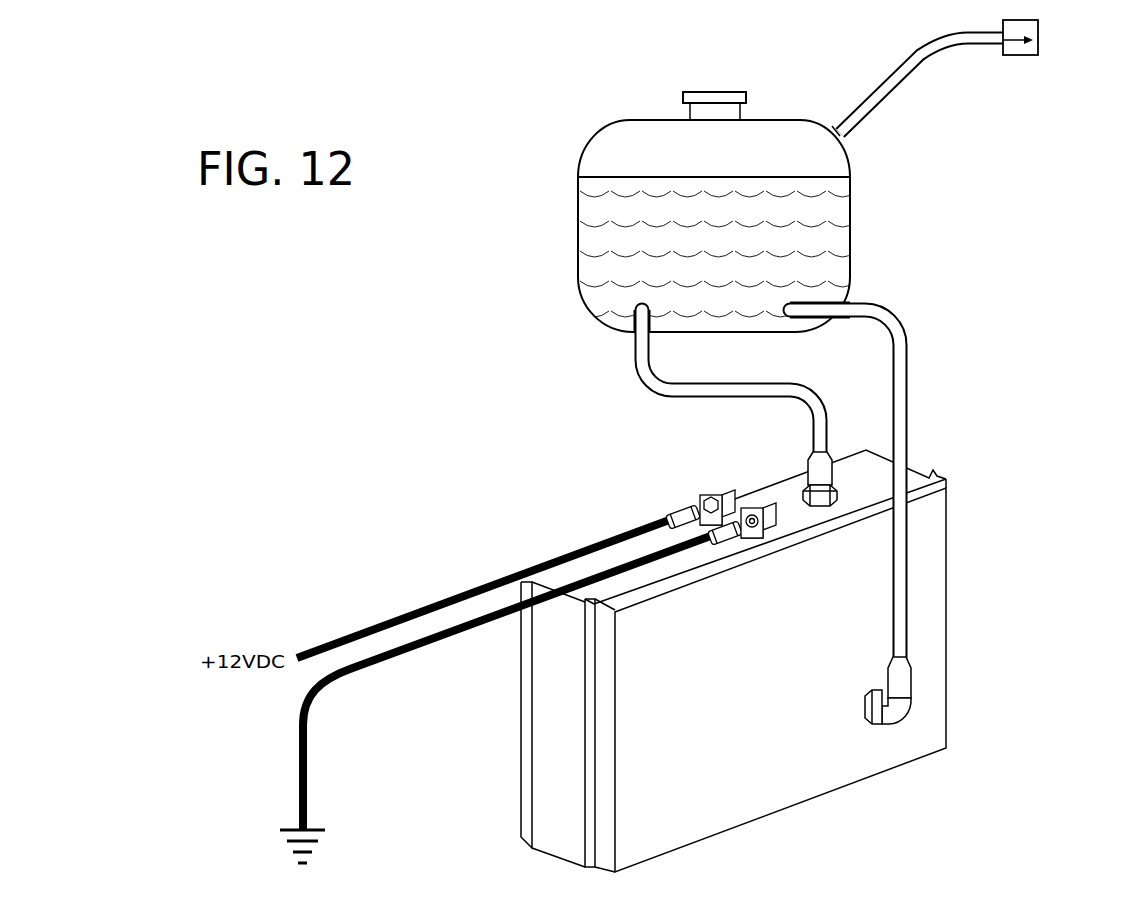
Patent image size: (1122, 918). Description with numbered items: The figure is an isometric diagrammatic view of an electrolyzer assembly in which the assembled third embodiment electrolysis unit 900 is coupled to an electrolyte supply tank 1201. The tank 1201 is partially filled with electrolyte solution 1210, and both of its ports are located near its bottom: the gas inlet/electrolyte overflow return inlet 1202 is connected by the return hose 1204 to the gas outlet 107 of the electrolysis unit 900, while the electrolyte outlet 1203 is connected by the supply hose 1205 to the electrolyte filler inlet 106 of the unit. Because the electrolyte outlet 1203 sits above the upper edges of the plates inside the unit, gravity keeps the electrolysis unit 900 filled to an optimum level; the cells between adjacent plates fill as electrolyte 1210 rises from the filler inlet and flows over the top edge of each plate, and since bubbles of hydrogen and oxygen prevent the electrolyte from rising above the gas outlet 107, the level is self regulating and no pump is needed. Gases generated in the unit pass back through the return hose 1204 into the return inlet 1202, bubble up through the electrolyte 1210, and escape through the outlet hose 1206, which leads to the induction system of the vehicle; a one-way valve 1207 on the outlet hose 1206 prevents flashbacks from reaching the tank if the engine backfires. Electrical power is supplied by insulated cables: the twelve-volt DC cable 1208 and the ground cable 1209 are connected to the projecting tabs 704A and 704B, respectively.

The electrolyte supply tank 1201 is at (594, 127).
The electrolyte solution 1210 is at (612, 243).
The gas inlet/electrolyte overflow return inlet 1202 is at (643, 315).
The electrolyte outlet 1203 is at (795, 310).
The return hose 1204 is at (658, 377).
The supply hose 1205 is at (901, 392).
The outlet hose 1206 is at (888, 83).
The one-way valve 1207 is at (1020, 50).
The gas outlet 107 is at (829, 485).
The electrolyte filler inlet 106 is at (895, 710).
The third embodiment electrolysis unit 900 is at (960, 510).
The projecting tab 704A is at (715, 495).
The projecting tab 704B is at (758, 507).
The insulated cable 1208 is at (415, 607).
The insulated cable 1209 is at (388, 662).